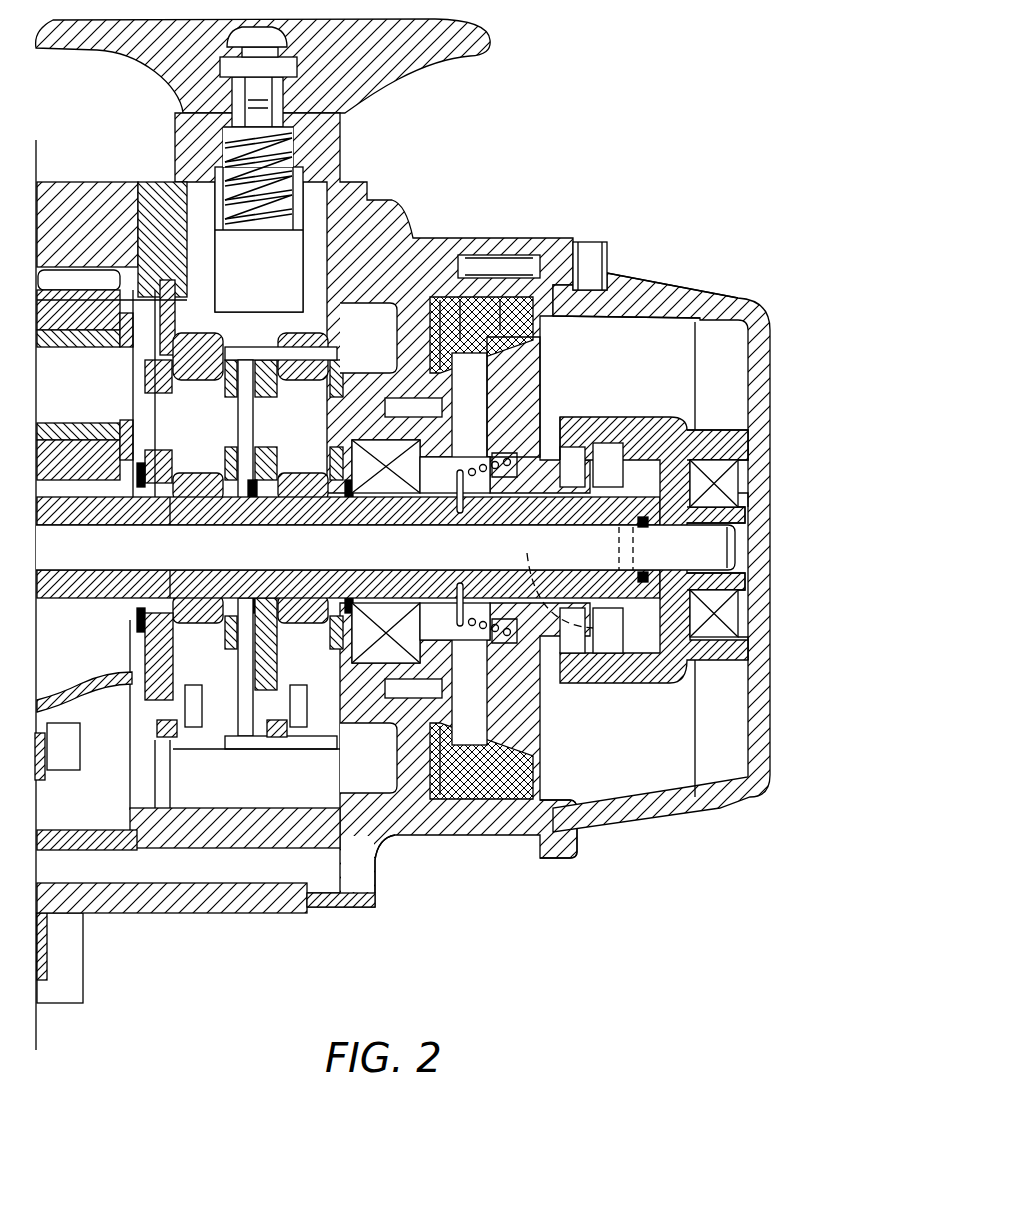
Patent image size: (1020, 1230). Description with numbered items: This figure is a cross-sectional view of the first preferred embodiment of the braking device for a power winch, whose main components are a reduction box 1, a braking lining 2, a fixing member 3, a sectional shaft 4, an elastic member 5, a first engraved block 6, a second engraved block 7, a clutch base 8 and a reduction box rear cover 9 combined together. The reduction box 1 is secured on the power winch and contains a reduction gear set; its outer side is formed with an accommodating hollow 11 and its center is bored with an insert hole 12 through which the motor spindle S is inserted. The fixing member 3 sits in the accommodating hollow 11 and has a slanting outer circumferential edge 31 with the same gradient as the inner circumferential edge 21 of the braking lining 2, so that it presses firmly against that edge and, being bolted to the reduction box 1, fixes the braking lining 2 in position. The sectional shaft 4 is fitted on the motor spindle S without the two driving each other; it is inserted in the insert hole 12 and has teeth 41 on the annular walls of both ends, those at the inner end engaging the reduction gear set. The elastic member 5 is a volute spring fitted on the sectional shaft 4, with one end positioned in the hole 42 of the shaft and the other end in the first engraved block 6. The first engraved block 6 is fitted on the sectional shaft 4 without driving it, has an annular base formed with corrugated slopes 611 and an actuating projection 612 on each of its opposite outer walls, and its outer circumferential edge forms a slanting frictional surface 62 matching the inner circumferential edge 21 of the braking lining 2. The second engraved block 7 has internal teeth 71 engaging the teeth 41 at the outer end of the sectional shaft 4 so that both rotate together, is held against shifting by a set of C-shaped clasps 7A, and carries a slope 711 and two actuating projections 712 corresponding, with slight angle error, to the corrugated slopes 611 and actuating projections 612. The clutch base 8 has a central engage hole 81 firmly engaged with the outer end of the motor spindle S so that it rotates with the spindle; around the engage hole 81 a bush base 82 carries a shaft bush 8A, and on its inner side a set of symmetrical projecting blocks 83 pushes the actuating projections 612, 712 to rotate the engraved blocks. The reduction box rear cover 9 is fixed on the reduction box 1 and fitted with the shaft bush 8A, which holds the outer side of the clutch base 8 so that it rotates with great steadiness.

The reduction box 1 is at (385, 252).
The braking lining 2 is at (520, 355).
The fixing member 3 is at (456, 372).
The slanting outer circumferential edge 31 is at (440, 372).
The inner circumferential edge 21 is at (494, 350).
The slanting frictional surface 62 is at (512, 350).
The slope 711 is at (600, 470).
The second engraved block 7 is at (633, 452).
The projecting blocks 83 is at (640, 448).
The clutch base 8 is at (663, 427).
The reduction box rear cover 9 is at (757, 333).
The teeth 41 is at (313, 592).
The teeth 71 is at (693, 433).
The shaft bush 8A is at (740, 478).
The bush base 82 is at (740, 493).
The motor spindle S is at (722, 550).
The central engage hole 81 is at (738, 613).
The C-shaped clasps 7A is at (627, 610).
The actuating projections 712 is at (604, 643).
The corrugated slopes 611 is at (603, 600).
The hole 42 is at (405, 637).
The sectional shaft 4 is at (392, 700).
The insert hole 12 is at (450, 760).
The accommodating hollow 11 is at (470, 720).
The elastic member 5 is at (517, 725).
The first engraved block 6 is at (527, 760).
The actuating projection 612 is at (553, 745).